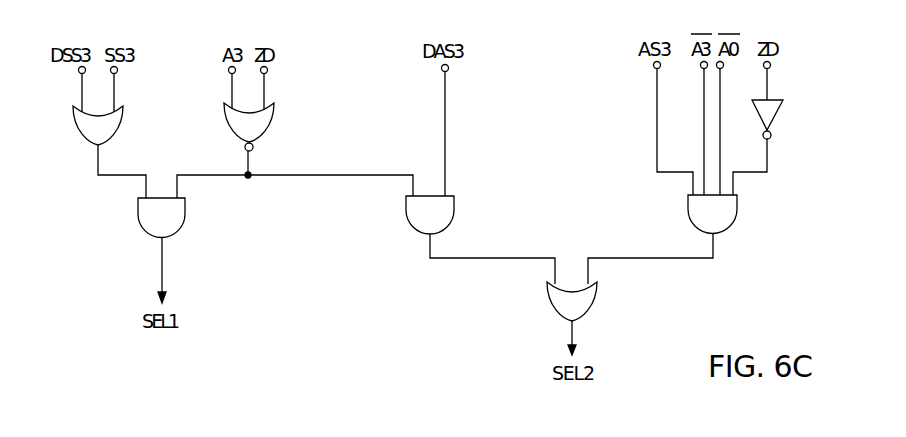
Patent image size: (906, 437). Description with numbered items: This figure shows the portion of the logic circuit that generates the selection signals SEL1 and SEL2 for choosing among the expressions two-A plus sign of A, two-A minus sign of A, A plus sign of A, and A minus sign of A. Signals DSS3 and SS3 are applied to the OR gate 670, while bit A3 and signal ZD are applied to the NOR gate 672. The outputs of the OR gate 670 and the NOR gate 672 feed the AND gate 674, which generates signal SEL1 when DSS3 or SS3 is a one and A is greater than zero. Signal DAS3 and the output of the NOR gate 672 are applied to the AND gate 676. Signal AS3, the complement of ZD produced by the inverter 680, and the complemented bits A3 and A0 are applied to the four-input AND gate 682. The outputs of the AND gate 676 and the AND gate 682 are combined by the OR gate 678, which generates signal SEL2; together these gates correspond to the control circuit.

The OR gate 670 is at (75, 127).
The NOR gate 672 is at (273, 125).
The AND gate 674 is at (137, 217).
The AND gate 676 is at (405, 217).
The OR gate 678 is at (594, 300).
The inverter 680 is at (779, 117).
The 4-input AND gate 682 is at (737, 215).